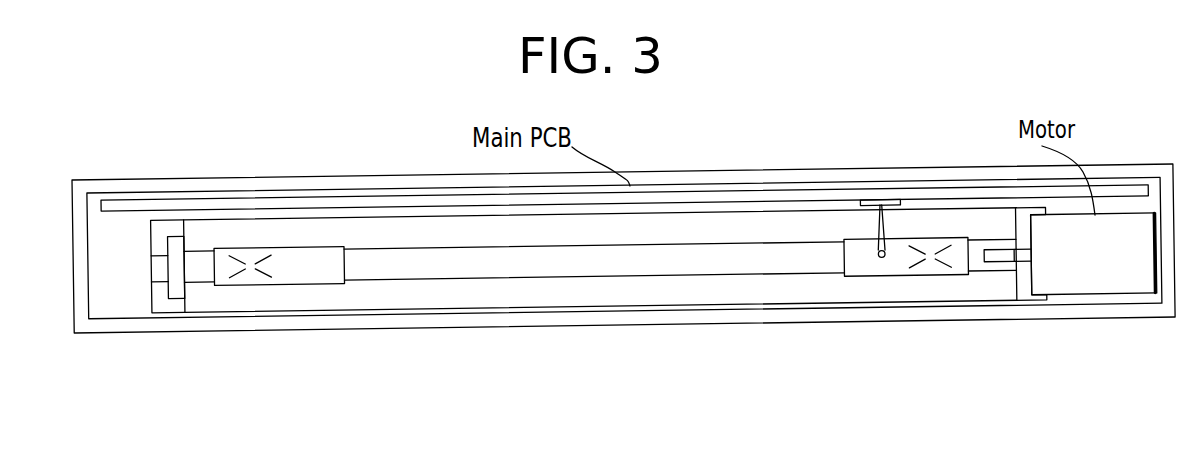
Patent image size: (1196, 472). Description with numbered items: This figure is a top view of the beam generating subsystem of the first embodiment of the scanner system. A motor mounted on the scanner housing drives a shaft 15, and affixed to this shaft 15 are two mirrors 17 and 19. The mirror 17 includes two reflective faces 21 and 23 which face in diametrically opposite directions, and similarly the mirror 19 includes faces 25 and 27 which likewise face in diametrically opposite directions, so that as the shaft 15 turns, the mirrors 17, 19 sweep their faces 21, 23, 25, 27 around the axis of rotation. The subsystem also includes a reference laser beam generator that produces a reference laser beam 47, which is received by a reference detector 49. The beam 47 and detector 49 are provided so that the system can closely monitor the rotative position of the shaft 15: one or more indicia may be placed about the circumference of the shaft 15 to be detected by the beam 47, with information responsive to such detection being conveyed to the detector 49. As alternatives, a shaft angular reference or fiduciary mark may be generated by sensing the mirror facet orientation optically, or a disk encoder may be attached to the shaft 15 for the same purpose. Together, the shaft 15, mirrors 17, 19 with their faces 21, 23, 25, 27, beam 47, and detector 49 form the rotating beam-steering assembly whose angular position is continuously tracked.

The shaft 15 is at (545, 268).
The mirror 17 is at (204, 284).
The mirror 19 is at (962, 276).
The reflective face 21 is at (247, 249).
The reflective face 23 is at (250, 286).
The face 25 is at (933, 240).
The face 27 is at (923, 274).
The laser beam 47 is at (880, 233).
The reference detector 49 is at (867, 202).